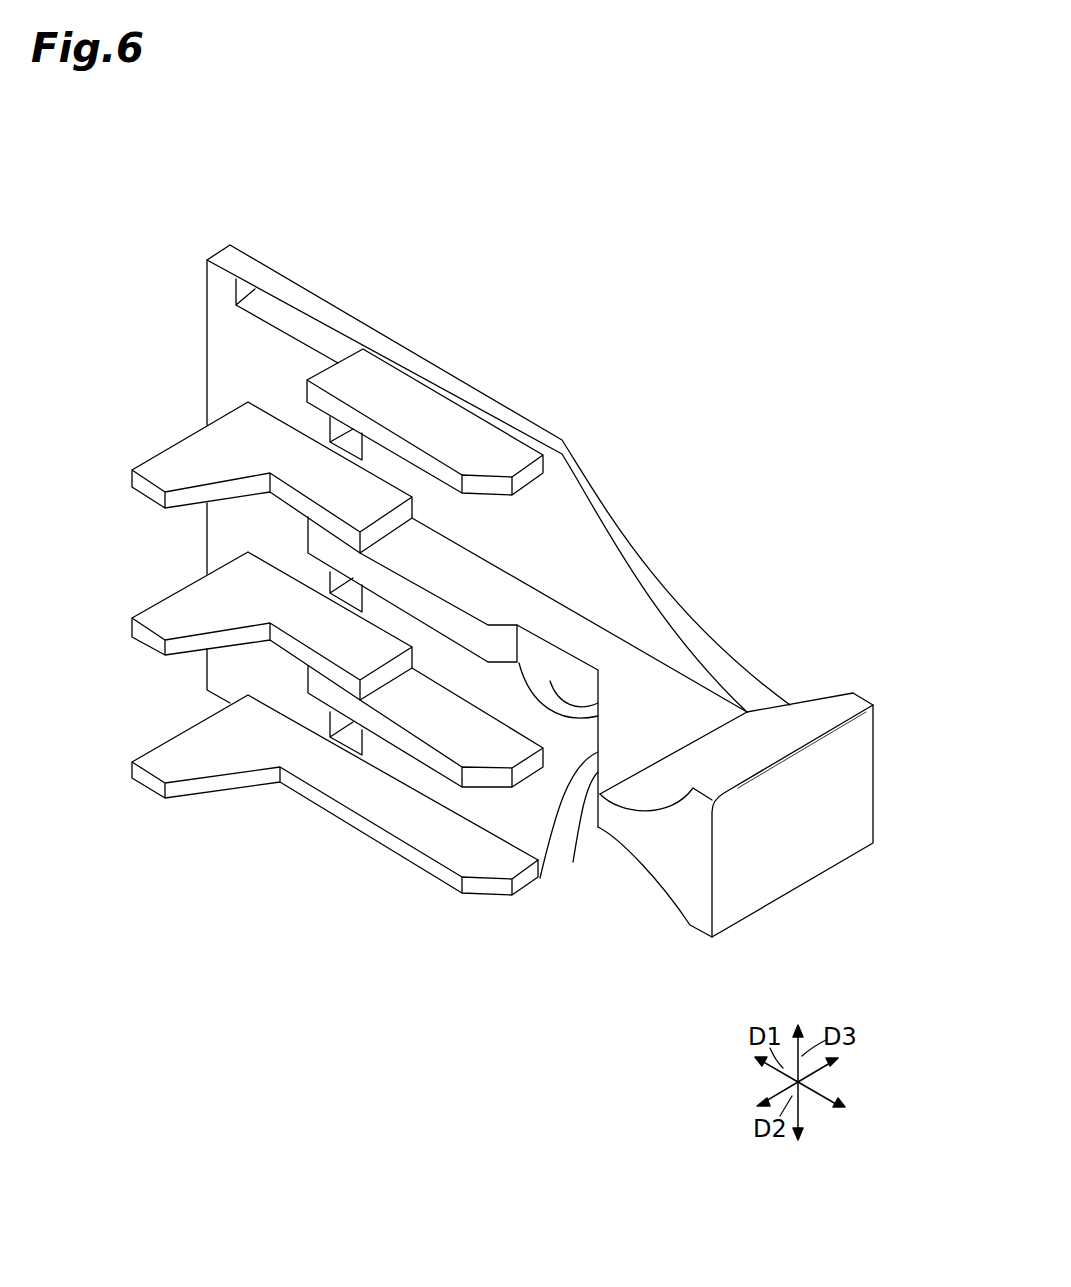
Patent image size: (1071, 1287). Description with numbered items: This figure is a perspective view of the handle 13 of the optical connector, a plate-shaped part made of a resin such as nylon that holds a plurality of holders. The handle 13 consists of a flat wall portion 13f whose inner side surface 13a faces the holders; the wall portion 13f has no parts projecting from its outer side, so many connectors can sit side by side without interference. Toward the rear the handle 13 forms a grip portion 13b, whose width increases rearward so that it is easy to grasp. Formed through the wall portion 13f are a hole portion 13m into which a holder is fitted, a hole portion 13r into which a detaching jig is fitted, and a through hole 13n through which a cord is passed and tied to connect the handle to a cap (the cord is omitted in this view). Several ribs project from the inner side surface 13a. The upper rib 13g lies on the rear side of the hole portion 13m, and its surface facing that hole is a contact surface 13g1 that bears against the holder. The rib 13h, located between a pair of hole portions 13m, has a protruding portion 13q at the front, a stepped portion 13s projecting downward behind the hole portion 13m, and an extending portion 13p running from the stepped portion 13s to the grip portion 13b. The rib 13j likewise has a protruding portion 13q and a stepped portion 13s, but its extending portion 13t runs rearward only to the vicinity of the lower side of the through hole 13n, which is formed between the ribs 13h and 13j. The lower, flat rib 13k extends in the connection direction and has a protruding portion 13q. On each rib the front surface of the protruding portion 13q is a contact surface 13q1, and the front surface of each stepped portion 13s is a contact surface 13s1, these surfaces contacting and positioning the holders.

The handle 13 is at (690, 354).
The inner side surface 13a is at (557, 528).
The grip portion 13b is at (848, 777).
The wall portion 13f is at (563, 450).
The rib 13g is at (420, 402).
The contact surface 13g1 is at (307, 380).
The rib 13h is at (228, 433).
The rib 13j is at (192, 590).
The rib 13k is at (203, 732).
The hole portion 13m is at (285, 318).
The through hole 13n is at (565, 718).
The extending portion 13p is at (548, 613).
The protruding portion 13q is at (157, 455).
The contact surface 13q1 is at (163, 450).
The hole portion 13r is at (350, 445).
The stepped portion 13s is at (322, 545).
The contact surface 13s1 is at (308, 523).
The extending portion 13t is at (495, 747).